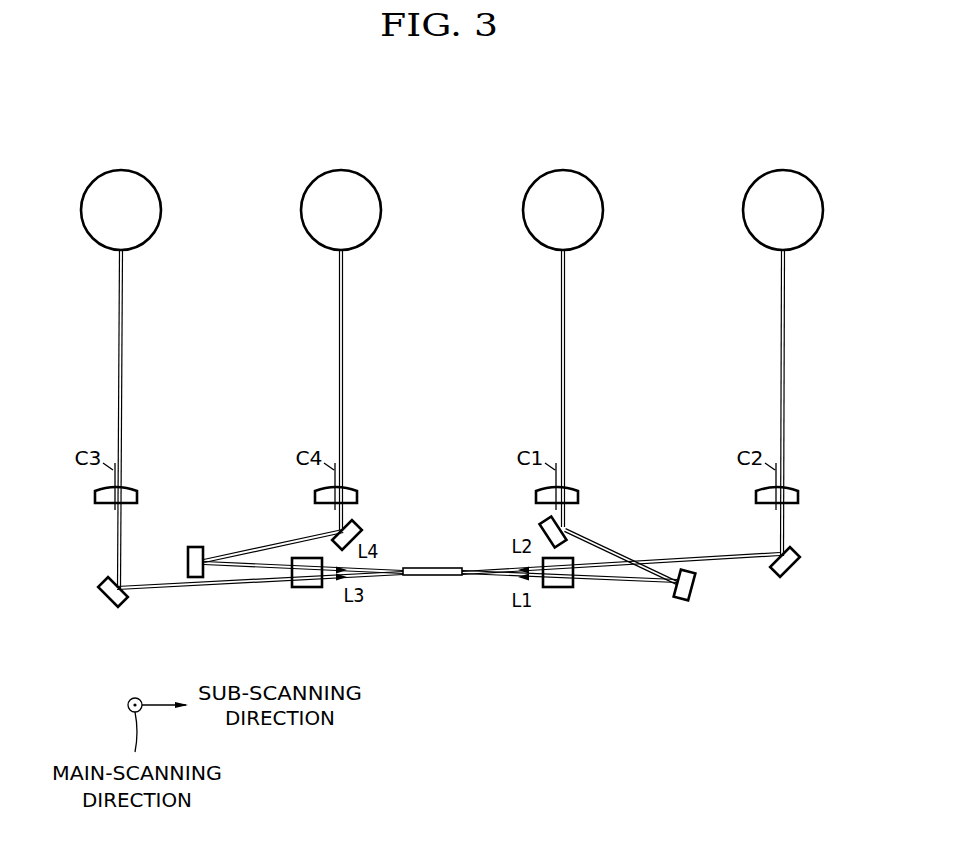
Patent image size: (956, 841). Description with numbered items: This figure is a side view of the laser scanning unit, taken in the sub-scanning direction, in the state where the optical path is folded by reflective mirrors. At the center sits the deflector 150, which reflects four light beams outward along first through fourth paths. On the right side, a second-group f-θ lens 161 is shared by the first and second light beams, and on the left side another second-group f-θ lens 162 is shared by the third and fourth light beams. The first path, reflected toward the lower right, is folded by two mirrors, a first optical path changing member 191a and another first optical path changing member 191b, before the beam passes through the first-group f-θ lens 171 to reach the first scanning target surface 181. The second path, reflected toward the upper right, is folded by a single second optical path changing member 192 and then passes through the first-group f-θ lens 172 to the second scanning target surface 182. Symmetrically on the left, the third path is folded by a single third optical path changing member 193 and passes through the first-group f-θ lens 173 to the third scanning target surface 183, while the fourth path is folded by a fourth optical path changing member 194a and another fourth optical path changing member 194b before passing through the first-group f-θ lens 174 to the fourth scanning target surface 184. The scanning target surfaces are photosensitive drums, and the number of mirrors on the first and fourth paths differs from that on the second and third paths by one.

The deflector 150 is at (433, 577).
The 2-1 f-θ lens 161 is at (554, 589).
The 2-2 f-θ lens 162 is at (308, 589).
The 1-1 f-θ lens 171 is at (574, 493).
The 1-2 f-θ lens 172 is at (794, 493).
The 1-3 f-θ lens 173 is at (133, 493).
The 1-4 f-θ lens 174 is at (353, 493).
The first scanning target surface 181 is at (563, 170).
The second scanning target surface 182 is at (783, 170).
The third scanning target surface 183 is at (121, 170).
The fourth scanning target surface 184 is at (341, 170).
The 1-1 optical path changing member 191a is at (686, 601).
The 1-2 optical path changing member 191b is at (542, 522).
The second optical path changing member 192 is at (786, 573).
The third optical path changing member 193 is at (107, 598).
The 4-1 optical path changing member 194a is at (196, 545).
The 4-2 optical path changing member 194b is at (361, 526).